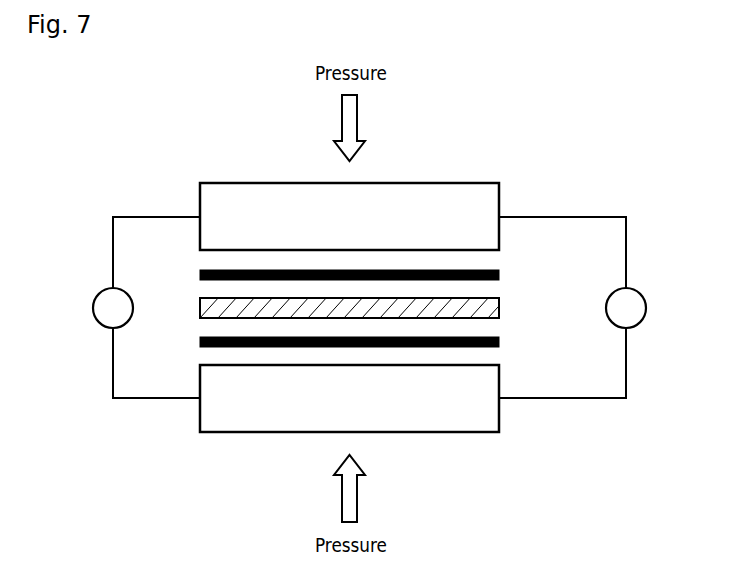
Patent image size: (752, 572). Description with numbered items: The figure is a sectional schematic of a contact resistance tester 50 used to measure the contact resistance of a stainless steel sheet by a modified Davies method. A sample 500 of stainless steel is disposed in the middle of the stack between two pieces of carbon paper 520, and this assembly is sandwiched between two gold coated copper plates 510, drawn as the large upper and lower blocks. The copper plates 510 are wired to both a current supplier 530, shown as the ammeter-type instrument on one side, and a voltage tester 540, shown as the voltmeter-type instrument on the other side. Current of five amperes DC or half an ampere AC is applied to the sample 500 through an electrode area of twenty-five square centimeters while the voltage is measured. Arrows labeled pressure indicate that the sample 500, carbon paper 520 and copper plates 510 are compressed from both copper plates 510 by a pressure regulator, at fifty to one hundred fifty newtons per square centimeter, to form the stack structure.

The contact resistance tester 50 is at (444, 126).
The sample 500 is at (499, 305).
The gold coated copper plates 510 is at (478, 188).
The carbon paper 520 is at (499, 275).
The current supplier 530 is at (499, 338).
The voltage tester 540 is at (96, 296).